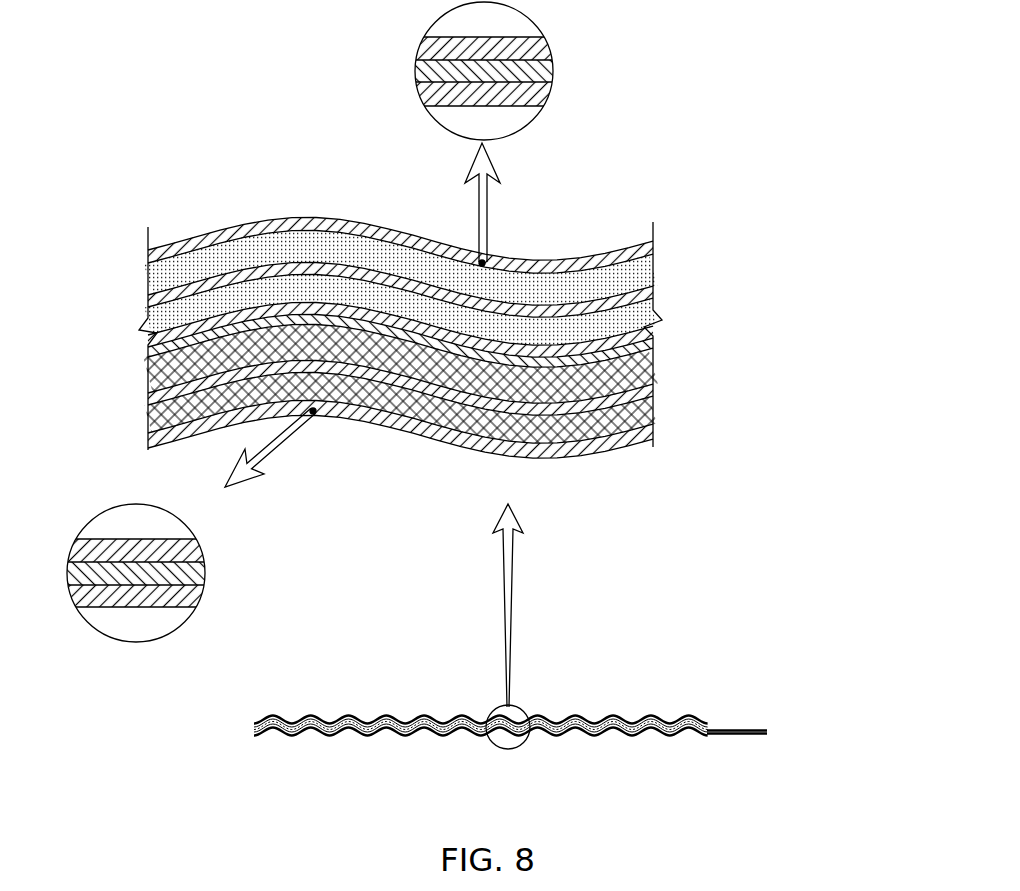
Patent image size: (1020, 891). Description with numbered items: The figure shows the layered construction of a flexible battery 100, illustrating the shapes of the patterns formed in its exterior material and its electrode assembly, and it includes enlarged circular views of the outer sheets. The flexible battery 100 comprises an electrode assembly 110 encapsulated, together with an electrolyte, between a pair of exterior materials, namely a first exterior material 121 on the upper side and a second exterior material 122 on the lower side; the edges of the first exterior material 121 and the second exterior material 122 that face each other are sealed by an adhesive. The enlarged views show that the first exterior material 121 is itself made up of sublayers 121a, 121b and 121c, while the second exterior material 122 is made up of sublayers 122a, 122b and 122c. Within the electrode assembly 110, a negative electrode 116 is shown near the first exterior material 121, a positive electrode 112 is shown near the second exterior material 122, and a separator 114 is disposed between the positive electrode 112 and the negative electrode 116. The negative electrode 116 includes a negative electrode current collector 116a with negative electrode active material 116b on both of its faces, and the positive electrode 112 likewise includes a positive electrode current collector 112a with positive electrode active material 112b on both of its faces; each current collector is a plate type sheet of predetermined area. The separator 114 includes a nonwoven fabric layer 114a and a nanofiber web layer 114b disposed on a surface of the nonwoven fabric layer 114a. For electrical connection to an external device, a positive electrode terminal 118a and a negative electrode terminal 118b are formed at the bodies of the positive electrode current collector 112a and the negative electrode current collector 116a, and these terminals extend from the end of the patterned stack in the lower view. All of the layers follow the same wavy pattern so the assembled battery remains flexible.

The flexible battery 100 is at (314, 202).
The electrode assembly 110 is at (805, 287).
The positive electrode 112 is at (747, 390).
The positive electrode current collector 112a is at (655, 400).
The positive electrode active material 112b is at (655, 376).
The separator 114 is at (747, 343).
The nonwoven fabric layer 114a is at (655, 341).
The nanofiber web layer 114b is at (655, 353).
The negative electrode 116 is at (747, 253).
The negative electrode current collector 116a is at (655, 297).
The negative electrode active material 116b is at (655, 272).
The positive electrode terminal 118a is at (738, 729).
The negative electrode terminal 118b is at (745, 736).
The first exterior material 121 is at (655, 250).
The first layer of upper protective film 121a is at (542, 97).
The second layer of upper protective film 121b is at (545, 68).
The third layer of upper protective film 121c is at (547, 43).
The second exterior material 122 is at (630, 449).
The first layer of lower protective film 122a is at (197, 547).
The second layer of lower protective film 122b is at (193, 573).
The third layer of lower protective film 122c is at (193, 598).